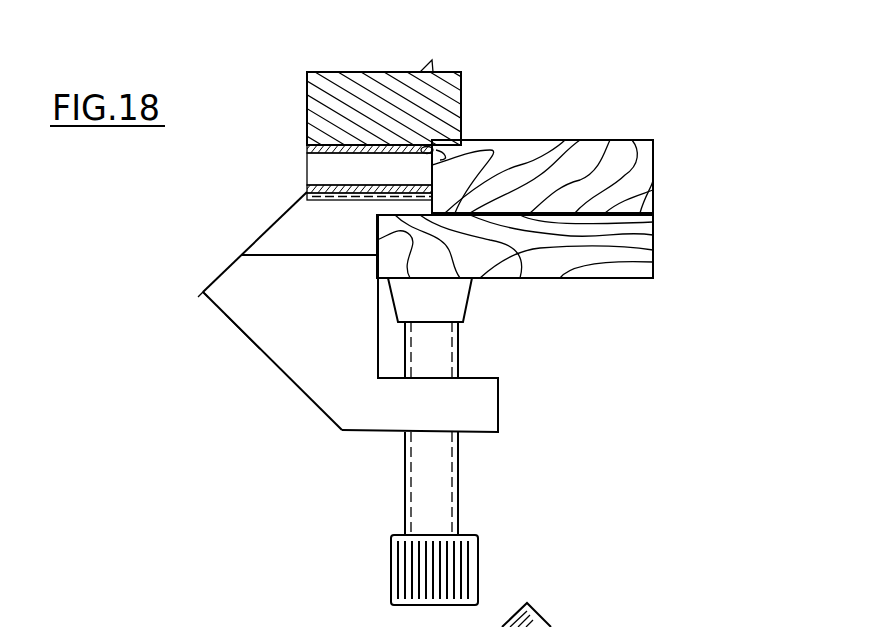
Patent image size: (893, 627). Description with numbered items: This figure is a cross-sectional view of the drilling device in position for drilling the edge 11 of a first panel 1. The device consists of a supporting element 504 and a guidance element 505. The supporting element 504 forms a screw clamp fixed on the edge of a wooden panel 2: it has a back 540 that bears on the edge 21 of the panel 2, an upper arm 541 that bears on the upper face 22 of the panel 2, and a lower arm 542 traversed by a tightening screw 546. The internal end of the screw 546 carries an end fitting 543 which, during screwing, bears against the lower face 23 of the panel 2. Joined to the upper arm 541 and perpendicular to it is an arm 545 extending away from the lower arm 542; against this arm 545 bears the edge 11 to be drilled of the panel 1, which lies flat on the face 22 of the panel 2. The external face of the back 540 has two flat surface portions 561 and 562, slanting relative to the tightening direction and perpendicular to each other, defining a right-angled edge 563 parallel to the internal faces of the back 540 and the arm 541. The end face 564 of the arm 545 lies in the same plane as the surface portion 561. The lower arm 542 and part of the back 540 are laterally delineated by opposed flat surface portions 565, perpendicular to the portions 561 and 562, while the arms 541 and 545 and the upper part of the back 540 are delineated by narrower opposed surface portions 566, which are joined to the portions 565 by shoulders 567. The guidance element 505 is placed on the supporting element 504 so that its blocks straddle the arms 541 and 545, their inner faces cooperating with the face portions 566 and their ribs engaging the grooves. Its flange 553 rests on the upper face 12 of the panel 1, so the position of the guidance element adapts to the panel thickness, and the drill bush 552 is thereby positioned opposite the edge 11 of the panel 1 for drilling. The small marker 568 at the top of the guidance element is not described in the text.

The panel 1 is at (561, 158).
The wooden panel 2 is at (486, 270).
The edge 11 is at (428, 146).
The upper face 12 is at (640, 141).
The edge 21 is at (377, 232).
The upper face 22 is at (600, 160).
The lower face 23 is at (641, 280).
The supporting element 504 is at (355, 309).
The guidance element 505 is at (326, 66).
The back 540 is at (380, 340).
The upper arm 541 is at (506, 277).
The lower arm 542 is at (484, 410).
The end fitting 543 is at (460, 307).
The arm 545 is at (440, 70).
The tightening screw 546 is at (427, 497).
The drill bush 552 is at (307, 150).
The flange 553 is at (441, 155).
The flat surface portion 561 is at (228, 265).
The flat surface portion 562 is at (272, 367).
The right-angled edge 563 is at (203, 292).
The end face 564 is at (425, 72).
The flat surface portion 565 is at (240, 302).
The surface portion 566 is at (298, 210).
The shoulder 567 is at (281, 255).
The marker wedge 568 is at (431, 60).